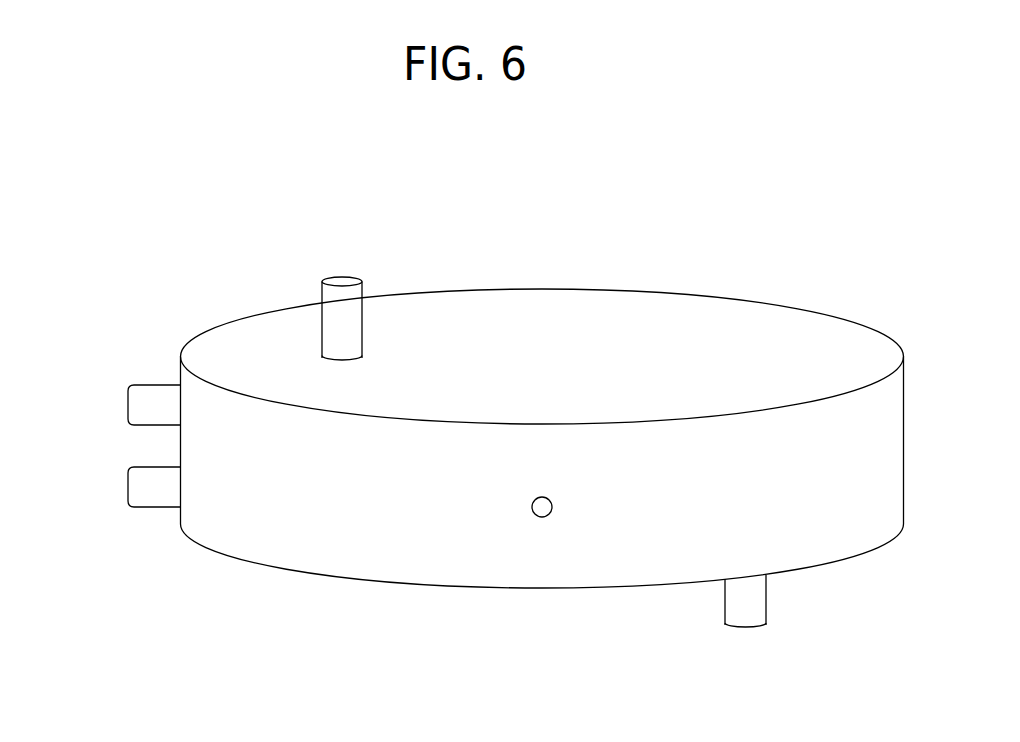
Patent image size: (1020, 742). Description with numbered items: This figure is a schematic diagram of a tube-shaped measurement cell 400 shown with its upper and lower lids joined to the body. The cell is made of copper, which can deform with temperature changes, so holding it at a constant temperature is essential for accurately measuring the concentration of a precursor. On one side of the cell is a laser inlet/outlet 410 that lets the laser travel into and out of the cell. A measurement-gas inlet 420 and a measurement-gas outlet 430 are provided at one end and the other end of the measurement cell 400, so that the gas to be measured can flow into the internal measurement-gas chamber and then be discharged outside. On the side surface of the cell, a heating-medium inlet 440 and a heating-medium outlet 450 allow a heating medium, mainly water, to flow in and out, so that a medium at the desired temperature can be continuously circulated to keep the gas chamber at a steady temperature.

The tube-shaped measurement cell 400 is at (507, 398).
The laser inlet/outlet 410 is at (560, 509).
The measurement-gas inlet 420 is at (342, 270).
The measurement-gas outlet 430 is at (747, 634).
The heating-medium inlet 440 is at (117, 496).
The heating-medium outlet 450 is at (117, 409).